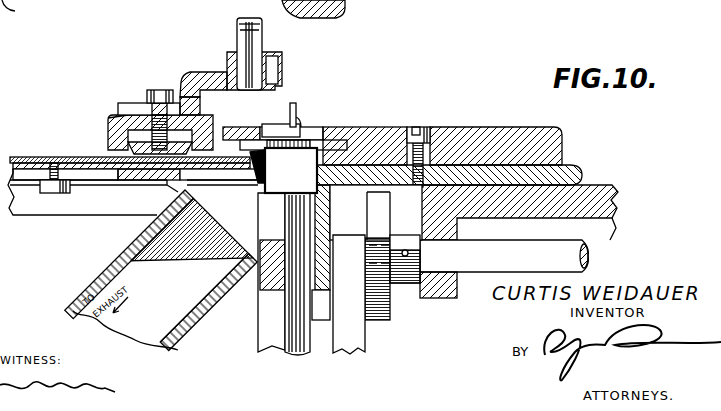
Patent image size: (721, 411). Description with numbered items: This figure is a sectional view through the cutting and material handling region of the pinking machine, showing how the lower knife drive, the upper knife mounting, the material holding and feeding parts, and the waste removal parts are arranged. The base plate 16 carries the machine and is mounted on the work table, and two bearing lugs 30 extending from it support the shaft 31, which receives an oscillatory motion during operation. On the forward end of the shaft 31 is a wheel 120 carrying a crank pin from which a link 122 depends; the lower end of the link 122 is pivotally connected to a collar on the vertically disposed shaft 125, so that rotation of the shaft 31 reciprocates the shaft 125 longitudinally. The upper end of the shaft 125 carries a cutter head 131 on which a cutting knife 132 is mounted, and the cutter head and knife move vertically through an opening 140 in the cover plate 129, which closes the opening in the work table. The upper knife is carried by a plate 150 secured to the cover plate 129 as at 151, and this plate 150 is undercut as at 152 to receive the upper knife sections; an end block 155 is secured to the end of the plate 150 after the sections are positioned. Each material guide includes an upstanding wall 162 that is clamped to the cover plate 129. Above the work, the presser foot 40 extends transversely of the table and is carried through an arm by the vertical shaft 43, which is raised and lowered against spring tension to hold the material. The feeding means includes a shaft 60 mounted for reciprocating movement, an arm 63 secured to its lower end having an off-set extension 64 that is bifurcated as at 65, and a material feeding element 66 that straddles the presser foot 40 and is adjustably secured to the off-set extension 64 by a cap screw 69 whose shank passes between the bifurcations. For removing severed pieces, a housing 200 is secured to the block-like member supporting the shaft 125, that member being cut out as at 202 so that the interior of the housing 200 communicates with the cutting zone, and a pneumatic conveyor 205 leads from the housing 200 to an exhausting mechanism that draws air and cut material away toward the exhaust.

The base plate 16 is at (612, 192).
The bearing lugs 30 is at (438, 290).
The shaft 31 is at (575, 245).
The presser foot 40 is at (108, 135).
The vertical shaft 43 is at (237, 32).
The shaft 60 is at (250, 40).
The arm 63 is at (213, 78).
The off-set extension 64 is at (195, 90).
The bifurcation 65 is at (128, 107).
The material feeding element 66 is at (118, 117).
The cap screw 69 is at (155, 95).
The wheel 120 is at (389, 320).
The link 122 is at (343, 335).
The shaft 125 is at (293, 338).
The cover plate 129 is at (577, 170).
The cutter head 131 is at (291, 170).
The cutting knife 132 is at (300, 127).
The opening 140 is at (332, 186).
The plate 150 is at (506, 132).
The securing means 151 is at (428, 128).
The undercut 152 is at (331, 127).
The end block 155 is at (240, 126).
The upstanding wall 162 is at (291, 103).
The housing 200 is at (242, 237).
The cut-out 202 is at (260, 207).
The pneumatic conveyor 205 is at (220, 322).